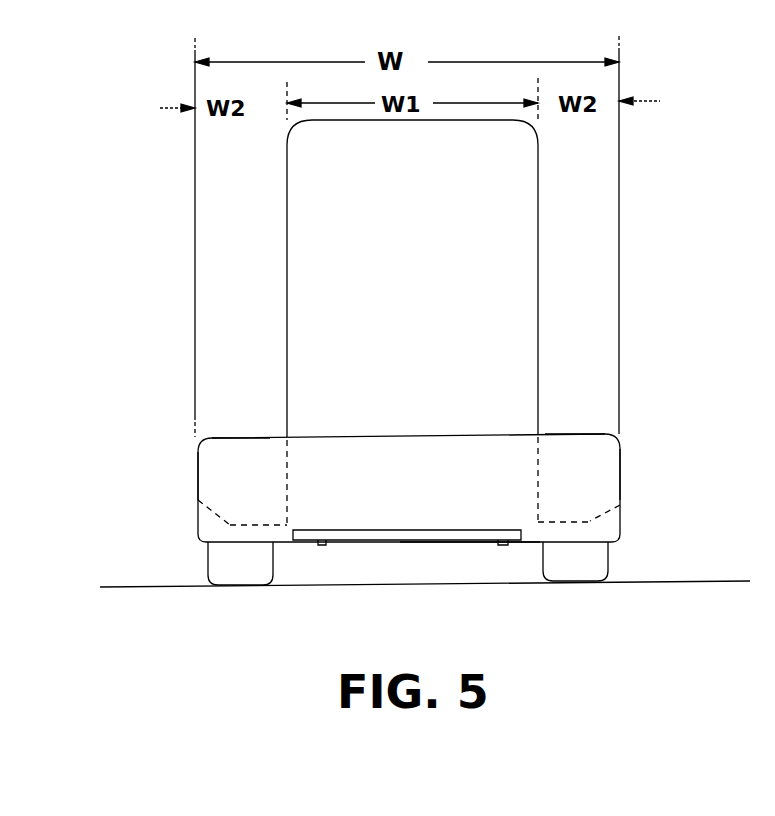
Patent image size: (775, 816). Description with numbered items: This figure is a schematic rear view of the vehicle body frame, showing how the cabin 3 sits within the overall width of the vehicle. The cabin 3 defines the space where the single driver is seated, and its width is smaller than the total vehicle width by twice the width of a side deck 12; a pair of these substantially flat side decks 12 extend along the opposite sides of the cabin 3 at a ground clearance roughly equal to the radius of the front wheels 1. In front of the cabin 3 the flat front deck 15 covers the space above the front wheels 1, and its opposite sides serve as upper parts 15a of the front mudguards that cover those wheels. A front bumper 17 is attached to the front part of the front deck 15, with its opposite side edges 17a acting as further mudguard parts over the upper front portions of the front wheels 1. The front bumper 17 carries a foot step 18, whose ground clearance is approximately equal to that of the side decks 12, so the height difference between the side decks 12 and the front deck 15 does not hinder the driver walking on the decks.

The cabin 3 is at (279, 258).
The front deck 15 is at (385, 437).
The upper parts of the front mudguards 15a is at (258, 437).
The side edges of the front bumper 17a is at (212, 468).
The side decks 12 is at (198, 500).
The front wheels 1 is at (222, 565).
The front bumper 17 is at (452, 500).
The foot step 18 is at (393, 530).